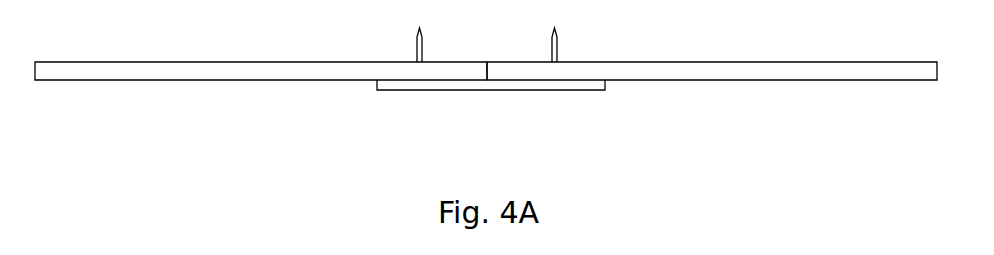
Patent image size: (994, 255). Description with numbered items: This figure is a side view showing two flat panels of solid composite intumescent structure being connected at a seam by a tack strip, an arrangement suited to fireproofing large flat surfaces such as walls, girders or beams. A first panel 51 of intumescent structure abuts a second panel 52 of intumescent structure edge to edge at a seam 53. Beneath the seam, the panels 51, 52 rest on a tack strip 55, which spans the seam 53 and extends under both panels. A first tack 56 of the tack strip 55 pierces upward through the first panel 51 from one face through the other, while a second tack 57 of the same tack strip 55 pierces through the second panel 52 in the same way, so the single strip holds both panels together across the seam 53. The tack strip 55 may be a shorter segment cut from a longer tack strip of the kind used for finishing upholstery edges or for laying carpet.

The first panel 51 is at (150, 71).
The second panel 52 is at (891, 70).
The seam 53 is at (489, 72).
The tack strip 55 is at (435, 85).
The first tack 56 is at (416, 42).
The second tack 57 is at (558, 43).